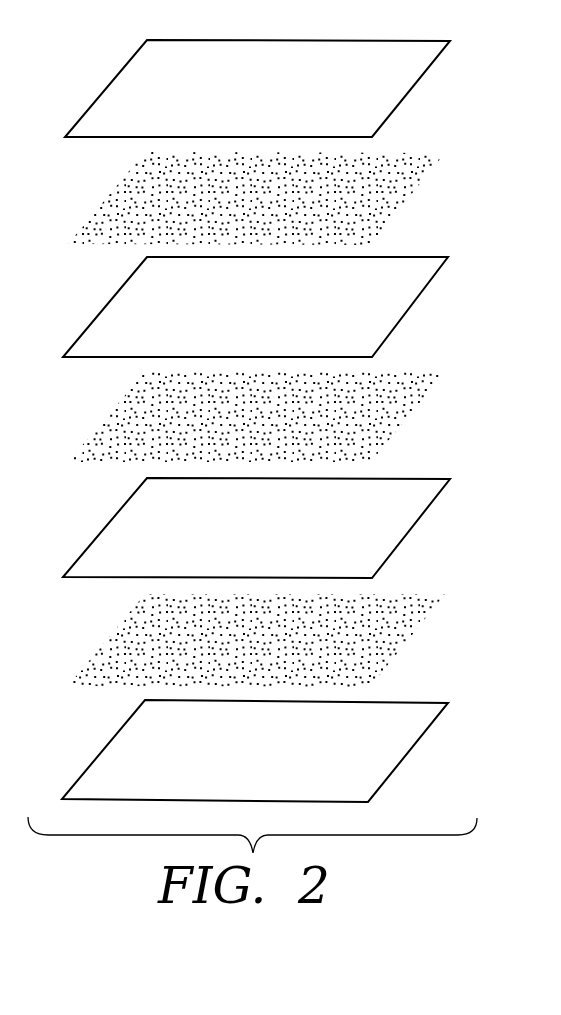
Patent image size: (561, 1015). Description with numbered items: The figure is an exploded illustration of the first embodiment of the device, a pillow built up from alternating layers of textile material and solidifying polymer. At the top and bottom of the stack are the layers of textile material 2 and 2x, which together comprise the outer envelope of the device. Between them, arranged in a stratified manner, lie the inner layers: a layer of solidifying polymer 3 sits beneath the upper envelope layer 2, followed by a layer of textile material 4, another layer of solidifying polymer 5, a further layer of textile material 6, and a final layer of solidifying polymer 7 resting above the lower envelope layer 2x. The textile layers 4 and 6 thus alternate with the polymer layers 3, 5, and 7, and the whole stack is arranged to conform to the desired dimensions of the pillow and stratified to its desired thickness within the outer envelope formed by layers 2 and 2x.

The layer of textile material 2 is at (416, 85).
The solidifying polymer layer 3 is at (415, 182).
The layer of textile material 4 is at (417, 303).
The solidifying polymer layer 5 is at (415, 402).
The layer of textile material 6 is at (417, 525).
The solidifying polymer layer 7 is at (415, 625).
The layer of textile material 2x is at (415, 748).